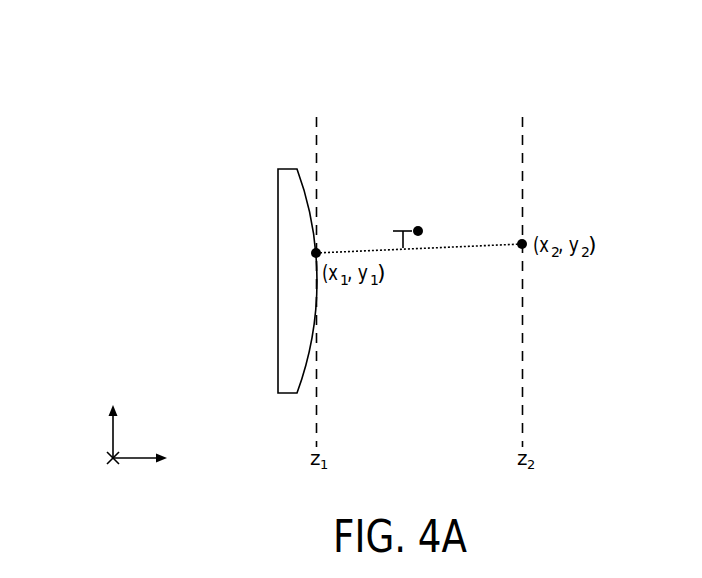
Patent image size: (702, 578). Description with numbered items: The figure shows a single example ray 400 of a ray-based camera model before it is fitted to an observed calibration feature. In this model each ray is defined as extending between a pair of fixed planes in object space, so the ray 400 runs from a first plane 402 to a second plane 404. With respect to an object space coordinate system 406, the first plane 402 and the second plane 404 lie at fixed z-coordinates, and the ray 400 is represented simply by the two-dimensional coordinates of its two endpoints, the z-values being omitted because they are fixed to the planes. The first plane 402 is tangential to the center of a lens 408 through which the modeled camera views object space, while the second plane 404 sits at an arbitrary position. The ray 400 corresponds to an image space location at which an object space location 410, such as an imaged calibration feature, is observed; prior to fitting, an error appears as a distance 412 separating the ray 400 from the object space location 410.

The ray 400 is at (445, 248).
The first plane 402 is at (318, 142).
The second plane 404 is at (524, 142).
The object space coordinate system 406 is at (70, 421).
The lens 408 is at (278, 217).
The object space location 410 is at (424, 230).
The distance 412 is at (393, 233).